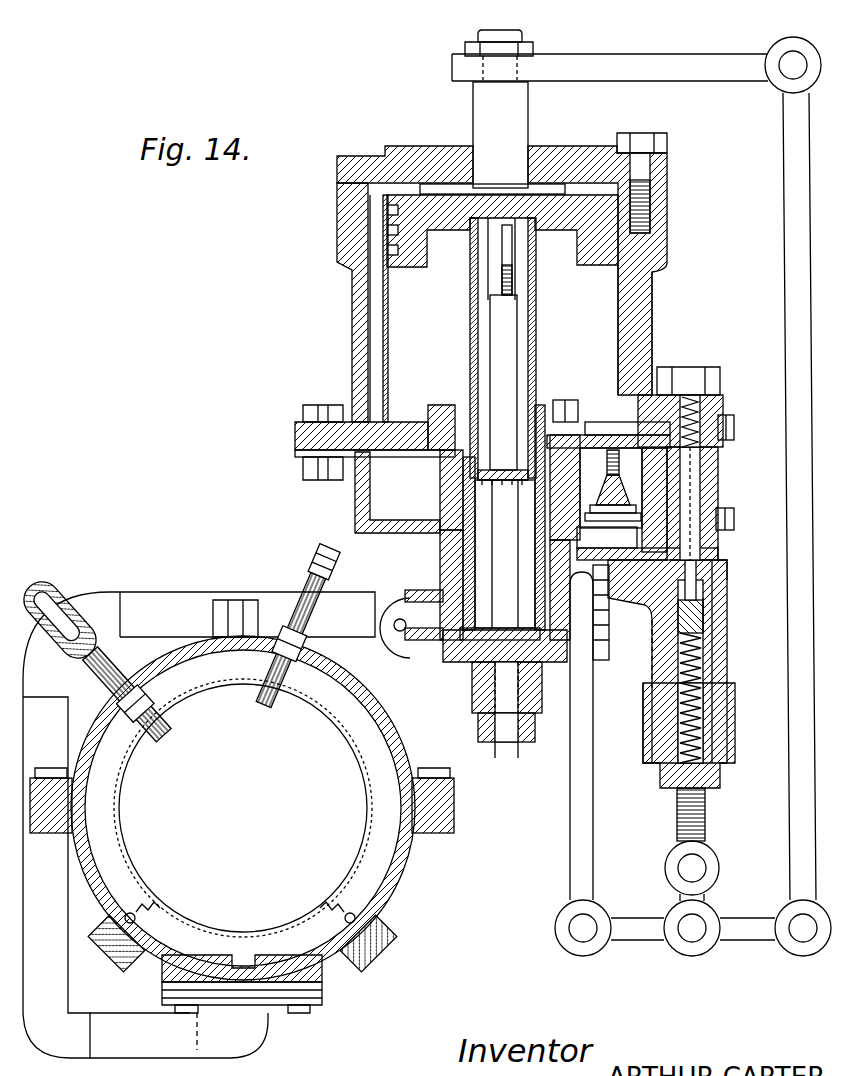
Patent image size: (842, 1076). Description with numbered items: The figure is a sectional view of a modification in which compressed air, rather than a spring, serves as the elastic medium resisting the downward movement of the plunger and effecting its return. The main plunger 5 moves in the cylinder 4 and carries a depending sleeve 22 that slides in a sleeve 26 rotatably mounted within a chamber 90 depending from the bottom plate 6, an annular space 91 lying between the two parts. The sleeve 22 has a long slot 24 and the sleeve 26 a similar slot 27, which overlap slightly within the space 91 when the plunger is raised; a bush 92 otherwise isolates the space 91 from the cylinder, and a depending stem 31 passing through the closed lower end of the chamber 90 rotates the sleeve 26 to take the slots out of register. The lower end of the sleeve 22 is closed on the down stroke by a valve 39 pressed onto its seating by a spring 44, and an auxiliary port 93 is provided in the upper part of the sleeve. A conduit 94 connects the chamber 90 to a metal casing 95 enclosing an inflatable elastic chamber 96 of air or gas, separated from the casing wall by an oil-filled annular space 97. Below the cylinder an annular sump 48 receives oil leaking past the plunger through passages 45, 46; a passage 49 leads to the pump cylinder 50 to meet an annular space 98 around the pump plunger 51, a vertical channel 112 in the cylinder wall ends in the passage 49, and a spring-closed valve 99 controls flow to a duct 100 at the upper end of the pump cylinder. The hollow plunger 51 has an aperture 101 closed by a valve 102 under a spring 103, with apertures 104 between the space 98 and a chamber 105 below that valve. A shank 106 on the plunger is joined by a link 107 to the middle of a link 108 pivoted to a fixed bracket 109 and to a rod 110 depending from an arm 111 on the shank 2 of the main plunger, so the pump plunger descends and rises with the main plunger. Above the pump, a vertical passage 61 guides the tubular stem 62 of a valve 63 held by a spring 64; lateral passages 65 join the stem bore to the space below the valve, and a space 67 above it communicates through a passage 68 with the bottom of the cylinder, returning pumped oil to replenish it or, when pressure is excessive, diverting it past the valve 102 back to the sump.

The shank 2 is at (485, 122).
The cylinder 4 is at (630, 318).
The main plunger 5 is at (640, 255).
The bottom plate 6 is at (410, 420).
The depending sleeve 22 is at (478, 305).
The long slot 24 is at (490, 350).
The sleeve 26 is at (470, 585).
The slot 27 is at (466, 662).
The depending stem 31 is at (480, 726).
The valve 39 is at (512, 470).
The spring 44 is at (513, 285).
The passage 45 is at (355, 183).
The passage 46 is at (370, 282).
The annular sump 48 is at (375, 515).
The passage 49 is at (636, 598).
The pump cylinder 50 is at (720, 650).
The pump plunger 51 is at (730, 672).
The vertical passage 61 is at (718, 540).
The tubular stem 62 is at (718, 492).
The valve 63 is at (723, 452).
The spring 64 is at (720, 410).
The lateral passages 65 is at (645, 430).
The space 67 is at (734, 428).
The passage 68 is at (630, 428).
The chamber 90 is at (445, 553).
The annular space 91 is at (460, 505).
The bush 92 is at (435, 405).
The auxiliary port 93 is at (490, 252).
The conduit 94 is at (200, 606).
The metal casing 95 is at (400, 872).
The elastic chamber 96 is at (128, 790).
The annular space 97 is at (98, 740).
The annular space 98 is at (660, 700).
The spring-closed valve 99 is at (560, 522).
The duct 100 is at (736, 514).
The aperture 101 is at (727, 560).
The valve 102 is at (720, 576).
The spring 103 is at (735, 712).
The apertures 104 is at (703, 596).
The chamber 105 is at (712, 618).
The shank 106 is at (705, 800).
The link 107 is at (708, 898).
The link 108 is at (752, 930).
The fixed bracket 109 is at (588, 838).
The rod 110 is at (795, 858).
The arm 111 is at (735, 72).
The vertical channel 112 is at (652, 645).